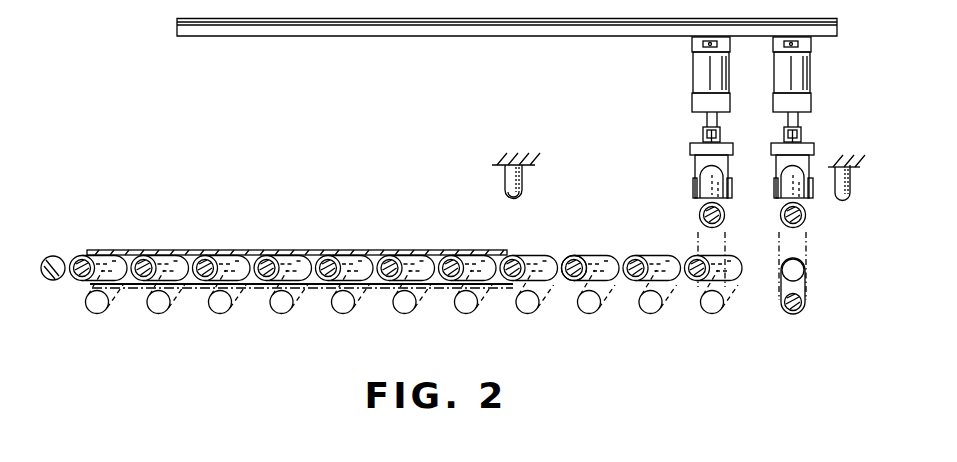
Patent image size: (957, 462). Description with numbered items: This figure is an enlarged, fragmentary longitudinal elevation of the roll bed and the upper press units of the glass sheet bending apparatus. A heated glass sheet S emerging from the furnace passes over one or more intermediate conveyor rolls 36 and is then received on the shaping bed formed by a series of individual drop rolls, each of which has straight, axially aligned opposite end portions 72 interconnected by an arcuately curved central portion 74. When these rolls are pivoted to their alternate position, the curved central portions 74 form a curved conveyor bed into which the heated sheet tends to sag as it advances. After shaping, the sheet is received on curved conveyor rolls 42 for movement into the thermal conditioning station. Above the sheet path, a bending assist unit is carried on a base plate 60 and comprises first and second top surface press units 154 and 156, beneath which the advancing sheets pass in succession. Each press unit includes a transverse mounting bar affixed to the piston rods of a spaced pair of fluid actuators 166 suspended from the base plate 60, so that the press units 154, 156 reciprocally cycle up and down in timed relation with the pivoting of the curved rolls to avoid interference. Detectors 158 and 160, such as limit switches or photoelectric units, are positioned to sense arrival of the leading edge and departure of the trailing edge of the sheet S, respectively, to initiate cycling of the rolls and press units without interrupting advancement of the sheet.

The base plate 60 is at (362, 38).
The fluid actuators 166 is at (700, 73).
The first top surface press unit 154 is at (688, 167).
The second top surface press unit 156 is at (815, 140).
The curved conveyor rolls 42 is at (781, 292).
The detector 158 is at (510, 183).
The detector 160 is at (845, 201).
The intermediate conveyor rolls 36 is at (54, 256).
The glass sheet S is at (194, 250).
The end portion 72 is at (566, 259).
The arcuately curved central portion 74 is at (600, 259).